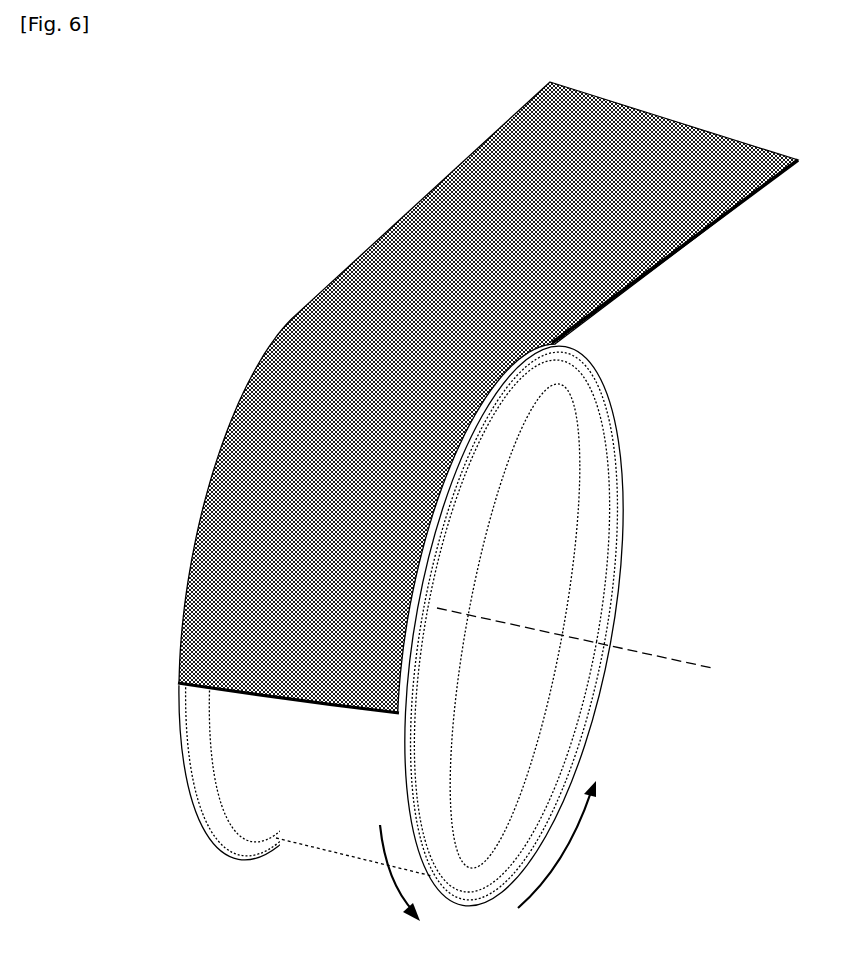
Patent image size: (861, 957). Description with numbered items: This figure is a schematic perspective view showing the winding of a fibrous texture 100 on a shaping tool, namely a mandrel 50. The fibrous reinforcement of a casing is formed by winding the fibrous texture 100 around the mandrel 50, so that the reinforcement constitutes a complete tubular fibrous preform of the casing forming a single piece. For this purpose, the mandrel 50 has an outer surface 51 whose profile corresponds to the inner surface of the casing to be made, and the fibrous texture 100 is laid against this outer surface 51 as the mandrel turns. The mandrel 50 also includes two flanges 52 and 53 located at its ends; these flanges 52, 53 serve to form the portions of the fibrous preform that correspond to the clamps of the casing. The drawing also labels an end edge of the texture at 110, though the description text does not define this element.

The mandrel 50 is at (426, 612).
The outer surface 51 is at (288, 818).
The flange 52 is at (470, 906).
The flange 53 is at (243, 858).
The fibrous texture 100 is at (488, 419).
The panel end edge 110 is at (315, 701).